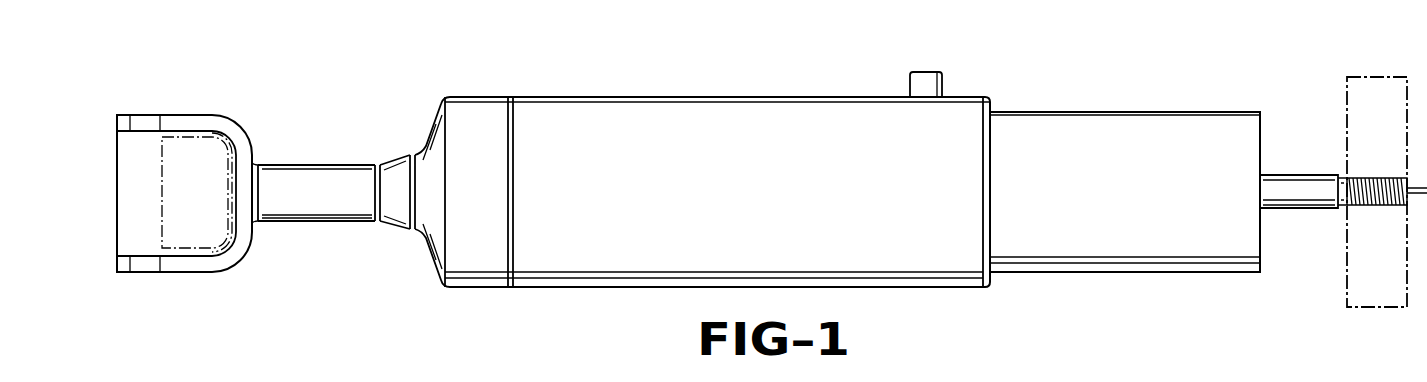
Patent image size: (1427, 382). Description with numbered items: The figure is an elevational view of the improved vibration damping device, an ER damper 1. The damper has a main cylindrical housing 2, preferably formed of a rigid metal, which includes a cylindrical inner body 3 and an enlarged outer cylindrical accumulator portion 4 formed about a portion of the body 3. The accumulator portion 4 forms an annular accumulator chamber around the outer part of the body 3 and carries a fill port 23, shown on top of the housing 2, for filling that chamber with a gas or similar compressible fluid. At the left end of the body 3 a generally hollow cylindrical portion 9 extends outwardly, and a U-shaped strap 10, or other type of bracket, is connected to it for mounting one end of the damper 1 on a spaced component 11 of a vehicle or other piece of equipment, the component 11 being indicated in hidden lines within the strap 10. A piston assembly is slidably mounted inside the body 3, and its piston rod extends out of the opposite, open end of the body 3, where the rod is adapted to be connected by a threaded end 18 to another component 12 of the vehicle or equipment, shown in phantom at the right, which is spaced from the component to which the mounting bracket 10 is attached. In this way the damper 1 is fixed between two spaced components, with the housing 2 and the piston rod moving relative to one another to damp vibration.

The ER damper 1 is at (584, 74).
The main cylindrical housing 2 is at (735, 92).
The cylindrical inner body 3 is at (1107, 247).
The outer cylindrical accumulator portion 4 is at (882, 262).
The hollow cylindrical portion 9 is at (302, 176).
The U-shaped strap 10 is at (177, 121).
The spaced component 11 is at (197, 252).
The another component 12 is at (1377, 77).
The threaded end 18 is at (1377, 178).
The fill port 23 is at (926, 72).